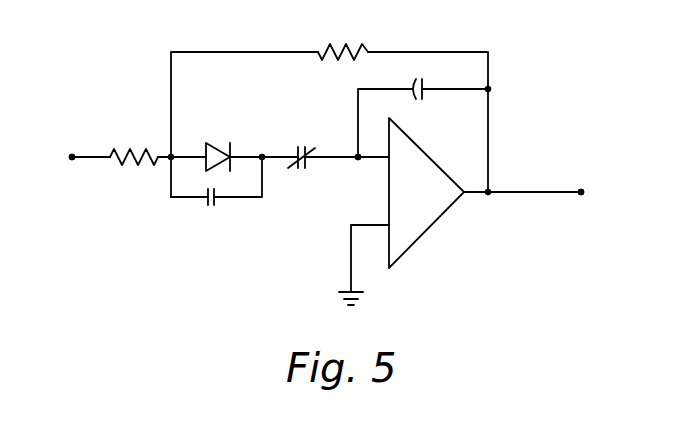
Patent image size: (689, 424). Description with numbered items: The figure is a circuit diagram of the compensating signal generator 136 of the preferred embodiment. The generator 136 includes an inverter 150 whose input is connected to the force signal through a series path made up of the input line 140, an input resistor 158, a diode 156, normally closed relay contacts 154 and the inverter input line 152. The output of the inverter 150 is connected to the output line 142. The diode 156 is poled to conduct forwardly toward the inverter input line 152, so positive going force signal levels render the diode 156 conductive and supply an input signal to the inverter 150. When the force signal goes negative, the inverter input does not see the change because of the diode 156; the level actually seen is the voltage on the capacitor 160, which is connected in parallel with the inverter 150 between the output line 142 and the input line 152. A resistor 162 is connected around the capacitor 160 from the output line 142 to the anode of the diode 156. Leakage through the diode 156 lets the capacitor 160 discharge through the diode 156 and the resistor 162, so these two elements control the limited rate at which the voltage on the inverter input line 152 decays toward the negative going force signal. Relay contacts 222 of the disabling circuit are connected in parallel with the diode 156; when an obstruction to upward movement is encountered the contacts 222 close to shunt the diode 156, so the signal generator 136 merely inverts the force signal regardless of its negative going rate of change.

The compensating signal generator 136 is at (513, 118).
The input line 140 is at (93, 155).
The output line 142 is at (525, 190).
The inverter 150 is at (429, 211).
The inverter input line 152 is at (339, 156).
The normally closed relay contacts 154 is at (296, 153).
The diode 156 is at (228, 148).
The input resistor 158 is at (138, 150).
The capacitor 160 is at (418, 80).
The resistor 162 is at (333, 48).
The relay contacts 222 is at (211, 210).